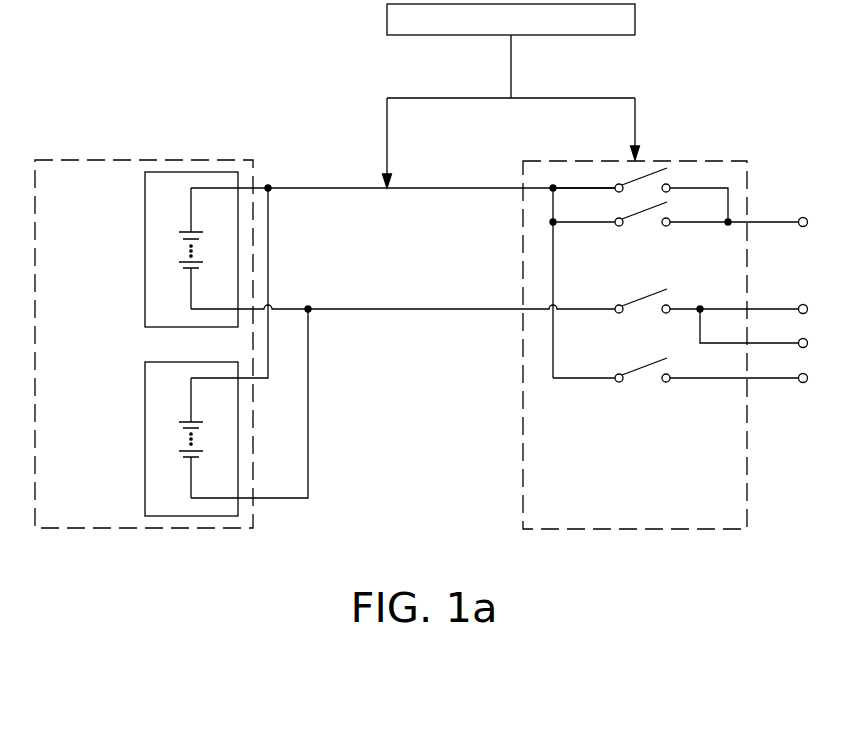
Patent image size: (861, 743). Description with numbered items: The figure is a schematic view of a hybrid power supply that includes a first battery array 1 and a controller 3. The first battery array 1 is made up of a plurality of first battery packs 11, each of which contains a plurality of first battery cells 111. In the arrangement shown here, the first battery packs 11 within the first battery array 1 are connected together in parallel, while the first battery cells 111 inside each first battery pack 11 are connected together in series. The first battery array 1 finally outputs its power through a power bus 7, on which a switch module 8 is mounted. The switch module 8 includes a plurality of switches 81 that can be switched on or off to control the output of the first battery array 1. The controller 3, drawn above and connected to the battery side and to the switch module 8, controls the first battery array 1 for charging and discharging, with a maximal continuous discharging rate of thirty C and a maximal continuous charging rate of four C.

The first battery array 1 is at (108, 160).
The first battery pack 11 is at (167, 172).
The first battery cell 111 is at (199, 220).
The controller 3 is at (635, 20).
The power bus 7 is at (768, 222).
The switch module 8 is at (523, 433).
The switch 81 is at (634, 363).